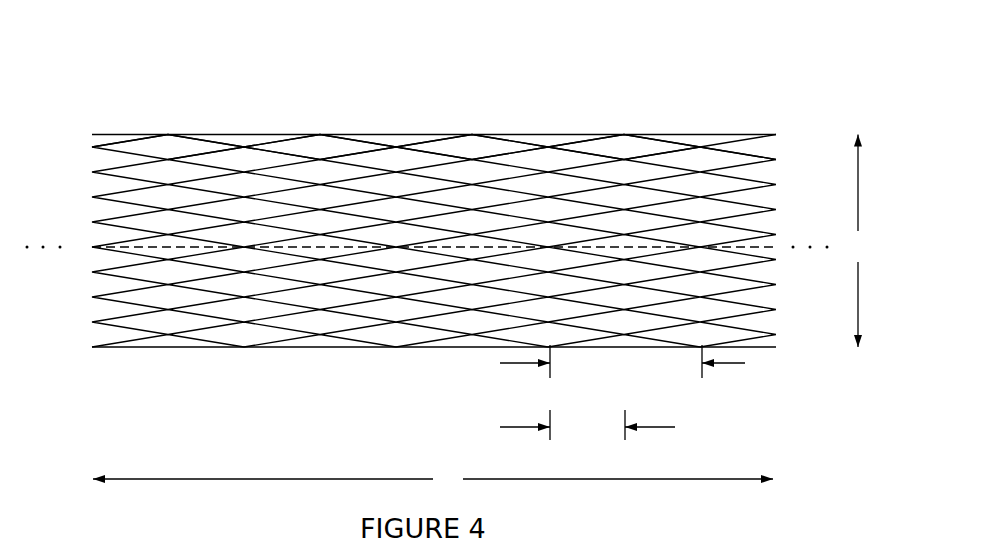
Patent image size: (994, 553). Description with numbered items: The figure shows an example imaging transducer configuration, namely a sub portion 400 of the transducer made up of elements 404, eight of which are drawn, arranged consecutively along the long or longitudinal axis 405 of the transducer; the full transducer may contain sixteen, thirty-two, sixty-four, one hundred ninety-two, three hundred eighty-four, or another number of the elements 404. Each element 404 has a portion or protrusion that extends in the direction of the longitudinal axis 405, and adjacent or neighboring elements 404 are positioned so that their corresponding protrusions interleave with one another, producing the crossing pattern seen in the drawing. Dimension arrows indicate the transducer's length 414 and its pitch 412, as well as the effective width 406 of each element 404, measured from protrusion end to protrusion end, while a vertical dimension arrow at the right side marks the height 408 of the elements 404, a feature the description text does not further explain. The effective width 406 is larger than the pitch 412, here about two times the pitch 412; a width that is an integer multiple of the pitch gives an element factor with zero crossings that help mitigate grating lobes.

The sub portion 400 is at (123, 32).
The elements 404 is at (135, 102).
The longitudinal axis 405 is at (84, 245).
The effective width 406 is at (632, 388).
The height H 408 is at (850, 118).
The pitch 412 is at (590, 448).
The length 414 is at (438, 463).